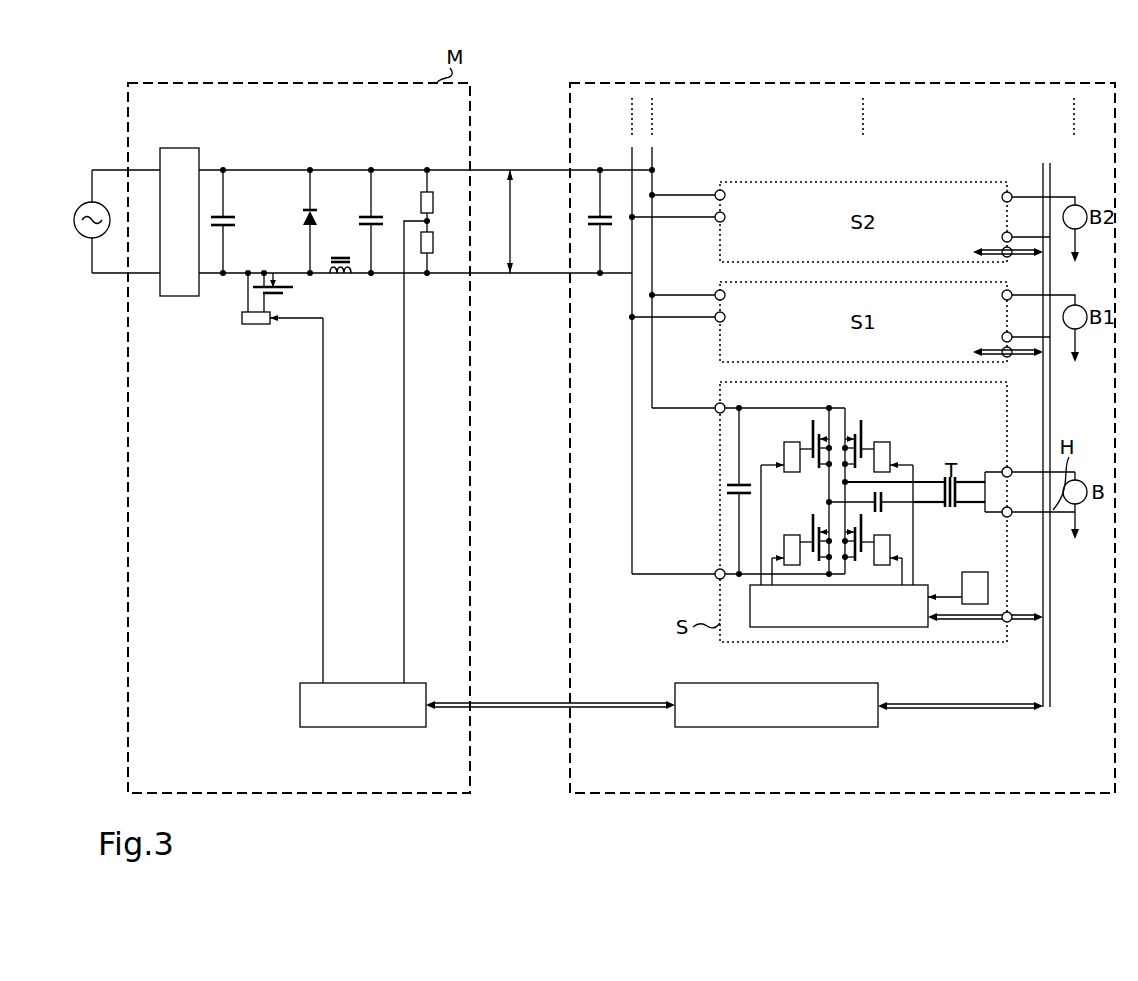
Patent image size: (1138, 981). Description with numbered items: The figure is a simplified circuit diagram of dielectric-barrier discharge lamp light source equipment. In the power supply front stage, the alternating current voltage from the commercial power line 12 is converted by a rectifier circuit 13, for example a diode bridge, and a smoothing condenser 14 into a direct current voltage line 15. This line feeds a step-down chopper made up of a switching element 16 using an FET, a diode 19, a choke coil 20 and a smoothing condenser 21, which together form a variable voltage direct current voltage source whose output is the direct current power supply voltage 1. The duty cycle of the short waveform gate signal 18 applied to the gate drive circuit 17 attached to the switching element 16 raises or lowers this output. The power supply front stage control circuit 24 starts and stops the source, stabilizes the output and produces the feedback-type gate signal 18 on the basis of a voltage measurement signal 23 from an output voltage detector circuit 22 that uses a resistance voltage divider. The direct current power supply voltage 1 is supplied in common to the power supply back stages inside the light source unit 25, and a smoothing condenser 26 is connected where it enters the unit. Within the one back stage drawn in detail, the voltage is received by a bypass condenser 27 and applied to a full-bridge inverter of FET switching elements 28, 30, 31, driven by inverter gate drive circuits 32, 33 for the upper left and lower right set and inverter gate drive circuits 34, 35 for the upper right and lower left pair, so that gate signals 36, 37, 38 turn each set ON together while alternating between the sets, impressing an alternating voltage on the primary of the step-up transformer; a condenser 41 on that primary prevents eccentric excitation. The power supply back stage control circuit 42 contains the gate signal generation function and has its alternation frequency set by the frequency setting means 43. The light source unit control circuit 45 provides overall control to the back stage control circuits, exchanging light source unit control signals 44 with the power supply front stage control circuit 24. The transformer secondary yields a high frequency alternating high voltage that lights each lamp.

The direct current power supply voltage 1 is at (503, 221).
The commercial power line 12 is at (84, 209).
The rectifier circuit 13 is at (170, 233).
The smoothing condenser 14 is at (232, 221).
The direct current voltage line 15 is at (234, 273).
The switching element 16 is at (269, 279).
The gate drive circuit 17 is at (256, 311).
The gate signal 18 is at (296, 499).
The diode 19 is at (323, 221).
The choke coil 20 is at (338, 280).
The smoothing condenser 21 is at (381, 221).
The output voltage detector circuit 22 is at (440, 221).
The voltage measurement signal 23 is at (401, 452).
The power supply front stage control circuit 24 is at (352, 716).
The light source unit 25 is at (587, 83).
The smoothing condenser 26 is at (610, 221).
The bypass condenser 27 is at (745, 491).
The switching element 28 is at (858, 561).
The switching element 30 is at (866, 438).
The switching element 31 is at (809, 530).
The inverter gate drive circuit 32 is at (784, 455).
The inverter gate drive circuit 33 is at (878, 522).
The inverter gate drive circuit 34 is at (887, 454).
The inverter gate drive circuit 35 is at (785, 545).
The gate signal 36 is at (772, 540).
The gate signal 37 is at (902, 578).
The gate signal 38 is at (772, 558).
The condenser 41 is at (887, 509).
The power supply back stage control circuit 42 is at (828, 617).
The frequency setting means 43 is at (964, 601).
The light source unit control signals 44 is at (550, 693).
The light source unit control circuit 45 is at (765, 716).